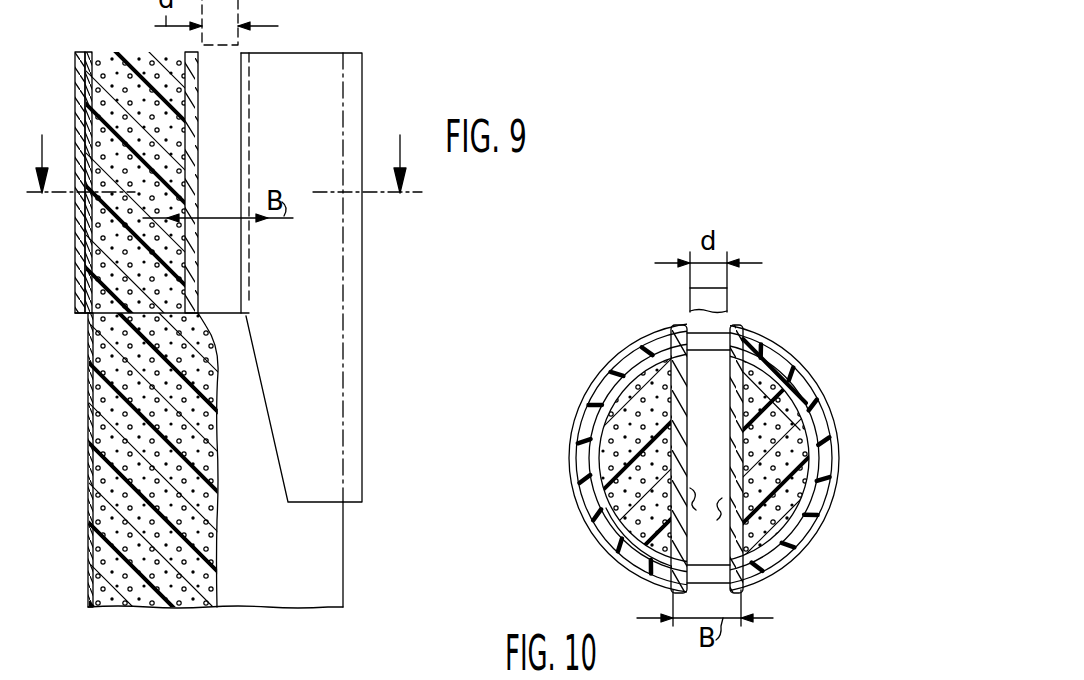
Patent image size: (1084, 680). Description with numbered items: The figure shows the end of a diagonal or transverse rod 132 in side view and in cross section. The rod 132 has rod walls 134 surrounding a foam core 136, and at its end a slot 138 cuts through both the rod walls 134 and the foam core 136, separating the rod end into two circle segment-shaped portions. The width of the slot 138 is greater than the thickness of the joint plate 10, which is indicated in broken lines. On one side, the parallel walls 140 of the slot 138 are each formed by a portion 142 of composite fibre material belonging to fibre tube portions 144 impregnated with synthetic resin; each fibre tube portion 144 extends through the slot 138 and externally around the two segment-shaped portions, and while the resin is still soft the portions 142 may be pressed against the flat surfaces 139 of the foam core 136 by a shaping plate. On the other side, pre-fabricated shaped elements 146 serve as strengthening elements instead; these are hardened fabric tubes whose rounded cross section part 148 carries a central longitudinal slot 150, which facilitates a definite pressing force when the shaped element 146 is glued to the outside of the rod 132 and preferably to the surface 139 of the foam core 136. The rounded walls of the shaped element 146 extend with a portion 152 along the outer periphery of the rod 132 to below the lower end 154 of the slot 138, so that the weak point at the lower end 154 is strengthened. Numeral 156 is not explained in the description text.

In FIG. 9, the joint plate 10 is at (256, 1).
In FIG. 10, the joint plate 10 is at (720, 297).
In FIG. 9, the rod 132 is at (346, 568).
In FIG. 9, the rod walls 134 is at (88, 556).
In FIG. 10, the rod walls 134 is at (608, 393).
In FIG. 9, the foam core 136 is at (110, 584).
In FIG. 10, the foam core 136 is at (627, 427).
In FIG. 9, the slot 138 is at (232, 131).
In FIG. 10, the slot 138 is at (712, 375).
In FIG. 9, the flat surfaces 139 is at (180, 291).
In FIG. 10, the flat surfaces 139 is at (780, 405).
In FIG. 9, the parallel walls 140 is at (230, 194).
In FIG. 10, the parallel walls 140 is at (603, 517).
In FIG. 9, the portion of composite fibre material 142 is at (198, 87).
In FIG. 10, the portion of composite fibre material 142 is at (672, 367).
In FIG. 10, the fibre tube portions 144 is at (576, 405).
In FIG. 9, the shaped elements 146 is at (326, 326).
In FIG. 10, the shaped elements 146 is at (806, 355).
In FIG. 10, the rounded cross section part 148 is at (810, 535).
In FIG. 10, the longitudinal slot 150 is at (835, 462).
In FIG. 9, the portion on the outer periphery 152 is at (323, 412).
In FIG. 9, the lower end of the slot 154 is at (222, 313).
In FIG. 10, the lower end of the slot 154 is at (707, 340).
In FIG. 10, the bonding layer 156 is at (767, 440).